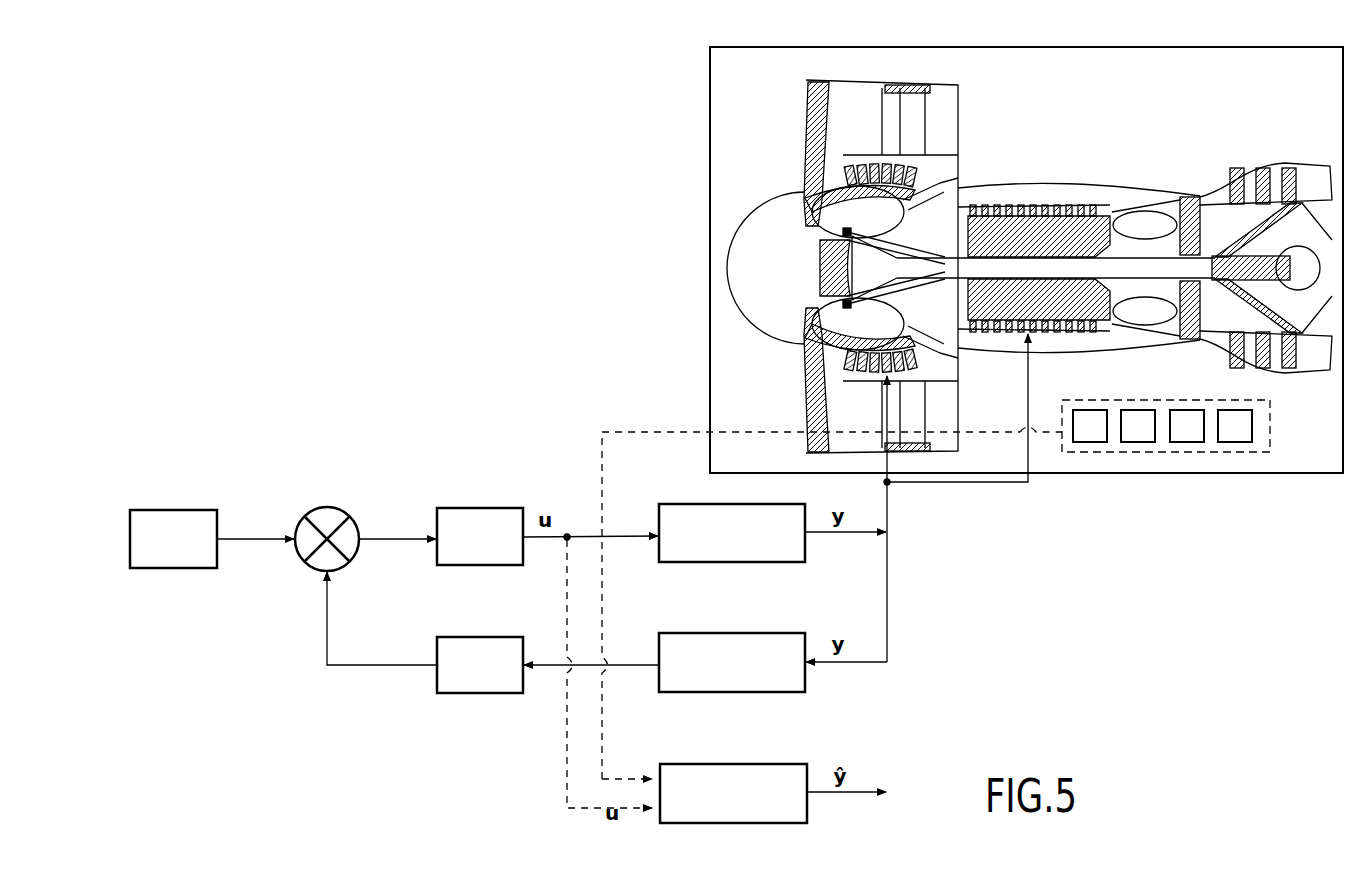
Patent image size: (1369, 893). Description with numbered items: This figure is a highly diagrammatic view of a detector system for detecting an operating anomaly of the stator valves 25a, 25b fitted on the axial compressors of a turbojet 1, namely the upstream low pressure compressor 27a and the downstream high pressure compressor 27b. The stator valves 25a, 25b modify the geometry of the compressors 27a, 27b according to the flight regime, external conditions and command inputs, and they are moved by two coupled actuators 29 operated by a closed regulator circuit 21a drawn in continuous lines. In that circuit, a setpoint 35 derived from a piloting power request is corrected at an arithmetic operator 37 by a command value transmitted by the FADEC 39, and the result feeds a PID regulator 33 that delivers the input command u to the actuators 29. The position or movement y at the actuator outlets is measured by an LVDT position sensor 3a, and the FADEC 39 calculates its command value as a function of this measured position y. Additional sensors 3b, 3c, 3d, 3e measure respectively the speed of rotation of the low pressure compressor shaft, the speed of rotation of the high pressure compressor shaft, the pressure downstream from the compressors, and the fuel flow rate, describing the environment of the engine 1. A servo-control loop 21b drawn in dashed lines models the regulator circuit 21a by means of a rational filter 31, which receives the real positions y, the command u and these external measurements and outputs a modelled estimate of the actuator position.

The turbojet 1 is at (1117, 133).
The LVDT position sensor 3a is at (732, 638).
The sensor 3b is at (1090, 410).
The sensor 3c is at (1138, 410).
The sensor 3d is at (1187, 410).
The sensor 3e is at (1235, 410).
The regulator circuit 21a is at (893, 593).
The servo-control loop 21b is at (597, 456).
The stator valve 25a is at (873, 165).
The stator valve 25b is at (1010, 205).
The low pressure compressor 27a is at (806, 188).
The high pressure compressor 27b is at (1093, 218).
The actuators 29 is at (671, 510).
The rational filter 31 is at (733, 770).
The PID regulator 33 is at (478, 510).
The setpoint 35 is at (172, 512).
The arithmetic operator 37 is at (327, 512).
The FADEC 39 is at (478, 639).